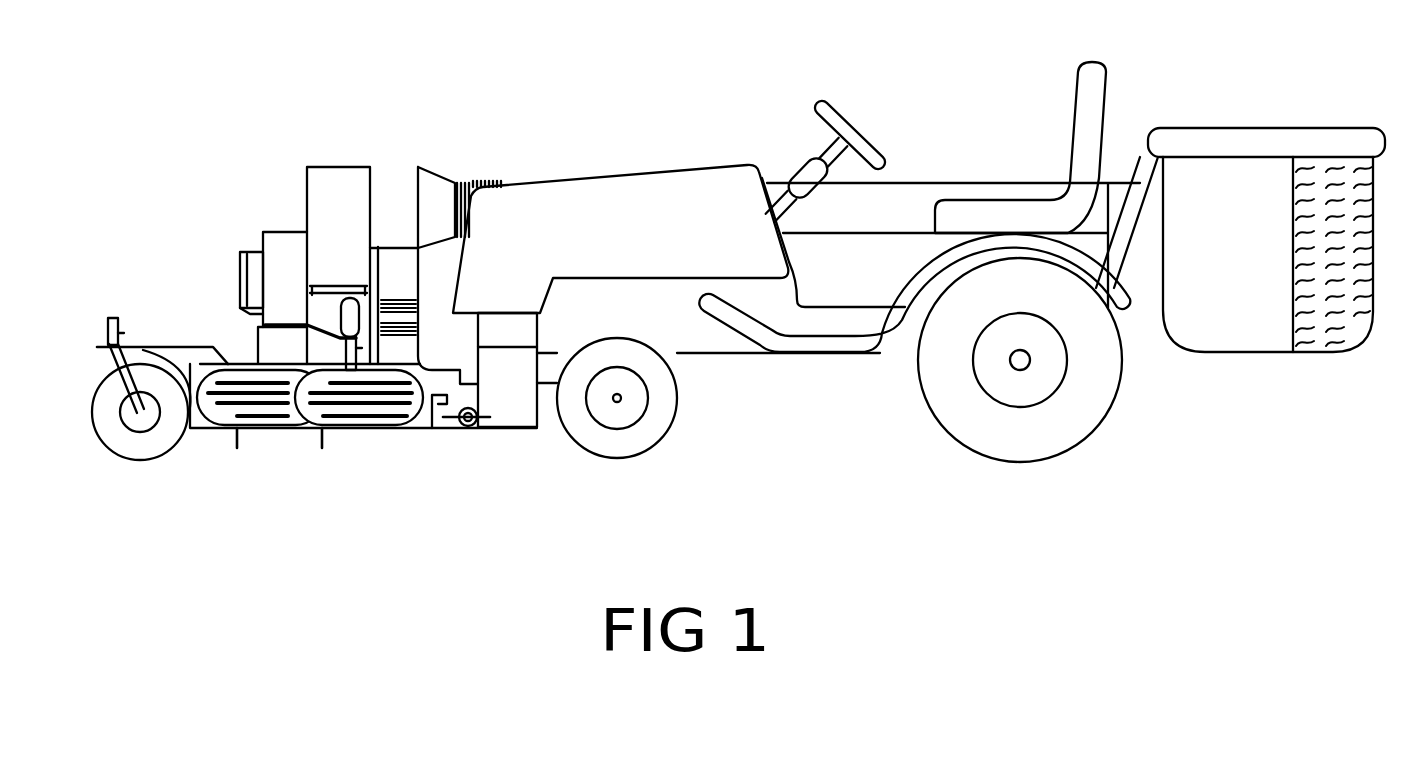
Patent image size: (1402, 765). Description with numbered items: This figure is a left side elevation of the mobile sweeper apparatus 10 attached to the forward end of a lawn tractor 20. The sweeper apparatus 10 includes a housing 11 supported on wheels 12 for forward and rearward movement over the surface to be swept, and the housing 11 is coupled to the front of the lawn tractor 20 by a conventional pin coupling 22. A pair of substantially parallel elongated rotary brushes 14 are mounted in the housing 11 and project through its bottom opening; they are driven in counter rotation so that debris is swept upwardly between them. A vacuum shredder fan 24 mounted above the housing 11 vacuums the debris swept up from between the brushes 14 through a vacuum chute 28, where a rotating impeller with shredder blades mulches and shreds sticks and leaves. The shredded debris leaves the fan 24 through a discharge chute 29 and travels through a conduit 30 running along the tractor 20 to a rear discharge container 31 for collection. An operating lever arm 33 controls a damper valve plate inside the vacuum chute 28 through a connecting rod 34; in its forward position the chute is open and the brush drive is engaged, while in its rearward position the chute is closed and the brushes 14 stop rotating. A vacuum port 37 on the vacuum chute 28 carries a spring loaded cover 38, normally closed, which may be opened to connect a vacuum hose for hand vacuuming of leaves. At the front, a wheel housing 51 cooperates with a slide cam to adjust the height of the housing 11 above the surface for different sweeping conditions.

The mobile sweeper apparatus 10 is at (226, 244).
The housing 11 is at (290, 237).
The wheels 12 is at (170, 456).
The rotary brushes 14 is at (237, 452).
The lawn tractor 20 is at (658, 193).
The pin coupling 22 is at (475, 428).
The vacuum shredder fan 24 is at (342, 185).
The vacuum chute 28 is at (262, 340).
The discharge chute 29 is at (402, 170).
The conduit 30 is at (910, 192).
The rear discharge container 31 is at (1242, 298).
The operating lever arm 33 is at (357, 327).
The connecting rod 34 is at (298, 323).
The vacuum port 37 is at (253, 253).
The spring loaded cover 38 is at (240, 273).
The wheel housing 51 is at (157, 350).